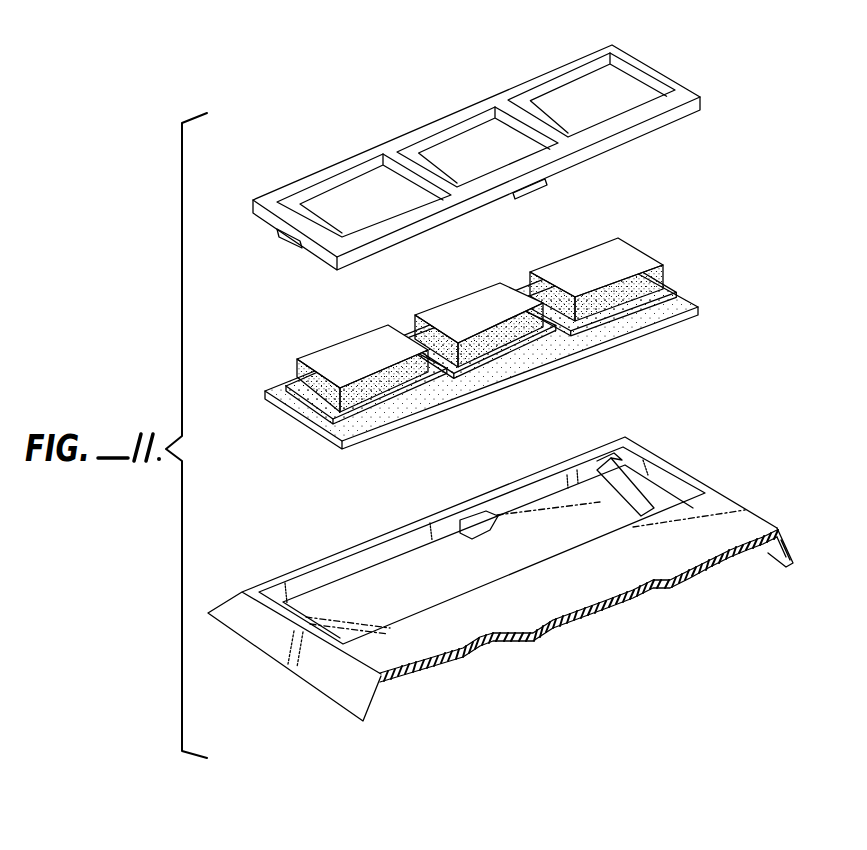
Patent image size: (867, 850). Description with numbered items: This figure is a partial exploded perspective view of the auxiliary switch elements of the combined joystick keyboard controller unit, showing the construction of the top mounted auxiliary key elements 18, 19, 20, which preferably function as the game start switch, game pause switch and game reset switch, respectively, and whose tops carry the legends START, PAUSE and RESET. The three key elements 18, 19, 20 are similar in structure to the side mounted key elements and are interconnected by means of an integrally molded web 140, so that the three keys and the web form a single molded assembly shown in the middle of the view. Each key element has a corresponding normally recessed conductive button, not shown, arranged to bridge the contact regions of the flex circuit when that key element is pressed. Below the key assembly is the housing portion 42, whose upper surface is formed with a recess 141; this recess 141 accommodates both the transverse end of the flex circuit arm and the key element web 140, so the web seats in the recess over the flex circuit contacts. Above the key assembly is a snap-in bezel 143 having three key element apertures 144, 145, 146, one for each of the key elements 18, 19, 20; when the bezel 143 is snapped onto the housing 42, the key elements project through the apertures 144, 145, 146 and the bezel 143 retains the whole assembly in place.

The top mounted key switch 18 is at (360, 337).
The top mounted key switch 19 is at (470, 297).
The top mounted key switch 20 is at (580, 257).
The housing 42 is at (720, 527).
The integrally molded web 140 is at (560, 345).
The recess 141 is at (600, 496).
The snap-in bezel 143 is at (476, 138).
The key element aperture 144 is at (333, 180).
The key element aperture 145 is at (418, 145).
The key element aperture 146 is at (578, 90).